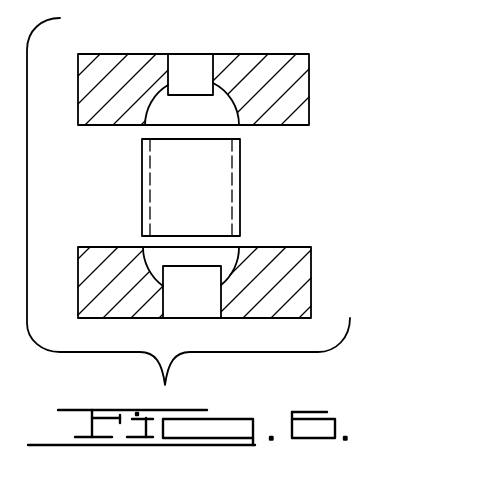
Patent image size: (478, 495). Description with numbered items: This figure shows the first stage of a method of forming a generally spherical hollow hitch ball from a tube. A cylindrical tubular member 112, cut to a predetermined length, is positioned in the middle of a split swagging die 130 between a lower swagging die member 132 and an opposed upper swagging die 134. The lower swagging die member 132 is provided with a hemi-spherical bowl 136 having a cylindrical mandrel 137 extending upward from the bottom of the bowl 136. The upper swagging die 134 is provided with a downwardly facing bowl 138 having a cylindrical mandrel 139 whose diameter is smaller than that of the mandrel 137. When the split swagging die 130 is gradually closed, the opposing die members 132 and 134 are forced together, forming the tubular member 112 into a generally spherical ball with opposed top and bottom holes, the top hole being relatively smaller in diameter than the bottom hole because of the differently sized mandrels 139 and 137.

The split swagging die 130 is at (371, 182).
The upper swagging die 134 is at (297, 86).
The cylindrical mandrel 139 is at (192, 68).
The downwardly facing bowl 138 is at (147, 110).
The cylindrical tubular member 112 is at (240, 167).
The lower swagging die member 132 is at (295, 267).
The hemi-spherical bowl 136 is at (234, 252).
The cylindrical mandrel 137 is at (202, 310).